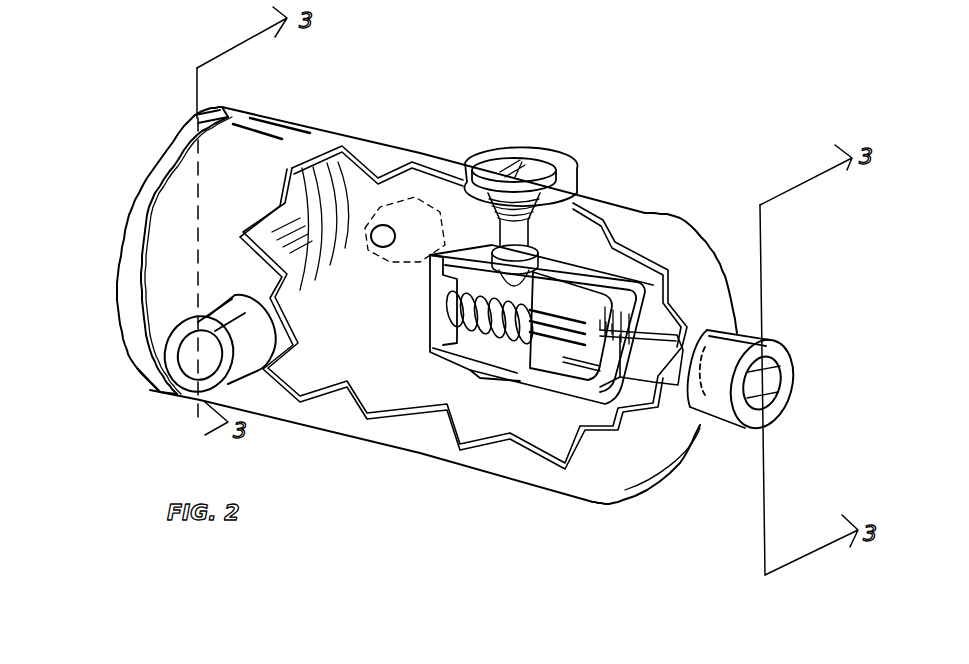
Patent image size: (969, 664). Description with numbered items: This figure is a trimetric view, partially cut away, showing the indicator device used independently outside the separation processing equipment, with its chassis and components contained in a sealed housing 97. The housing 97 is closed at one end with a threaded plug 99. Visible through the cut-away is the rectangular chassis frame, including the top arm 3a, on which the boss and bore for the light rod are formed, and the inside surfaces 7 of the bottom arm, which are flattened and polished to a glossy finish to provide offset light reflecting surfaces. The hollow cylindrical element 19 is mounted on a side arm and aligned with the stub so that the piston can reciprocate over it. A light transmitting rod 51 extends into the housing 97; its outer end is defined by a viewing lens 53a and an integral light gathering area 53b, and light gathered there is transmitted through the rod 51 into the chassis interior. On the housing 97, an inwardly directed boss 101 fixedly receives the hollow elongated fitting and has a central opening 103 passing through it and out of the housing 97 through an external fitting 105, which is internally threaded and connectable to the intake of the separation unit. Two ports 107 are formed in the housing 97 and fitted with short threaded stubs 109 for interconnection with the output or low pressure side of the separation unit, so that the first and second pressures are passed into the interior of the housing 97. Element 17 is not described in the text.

The top arm 3a is at (470, 262).
The inside surfaces 7 is at (437, 263).
The housing 17 is at (480, 366).
The hollow cylindrical element 19 is at (563, 337).
The light transmitting rod 51 is at (515, 250).
The viewing lens 53a is at (517, 160).
The light gathering area 53b is at (497, 158).
The housing 97 is at (363, 440).
The threaded plug 99 is at (122, 292).
The inwardly directed boss 101 is at (637, 367).
The central opening 103 is at (793, 390).
The external fitting 105 is at (722, 403).
The ports 107 is at (173, 385).
The threaded stubs 109 is at (390, 160).